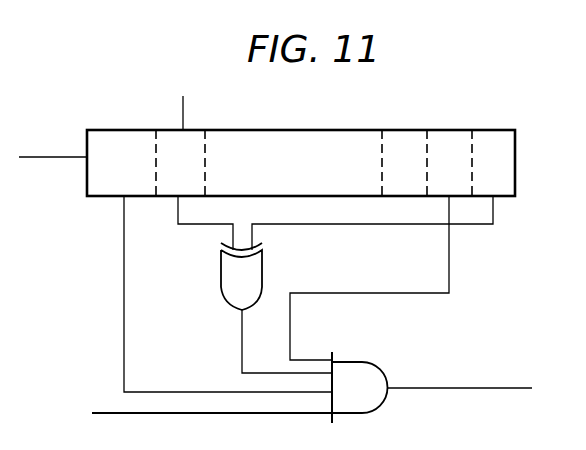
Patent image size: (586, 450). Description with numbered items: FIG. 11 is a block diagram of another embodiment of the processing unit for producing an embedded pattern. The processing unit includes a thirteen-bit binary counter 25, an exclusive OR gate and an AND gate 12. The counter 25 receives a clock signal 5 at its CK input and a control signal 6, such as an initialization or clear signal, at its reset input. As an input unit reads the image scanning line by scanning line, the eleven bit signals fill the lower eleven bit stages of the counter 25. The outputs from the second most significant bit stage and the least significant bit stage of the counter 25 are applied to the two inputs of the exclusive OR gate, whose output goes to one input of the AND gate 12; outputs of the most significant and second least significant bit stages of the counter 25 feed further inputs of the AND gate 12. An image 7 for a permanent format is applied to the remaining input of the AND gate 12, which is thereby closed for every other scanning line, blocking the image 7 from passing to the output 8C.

The clock signal 5 is at (42, 160).
The control signal 6 is at (191, 102).
The 13-bit binary counter 25 is at (403, 130).
The image 7 is at (167, 414).
The AND gate 12 is at (361, 406).
The output line 8C is at (441, 388).